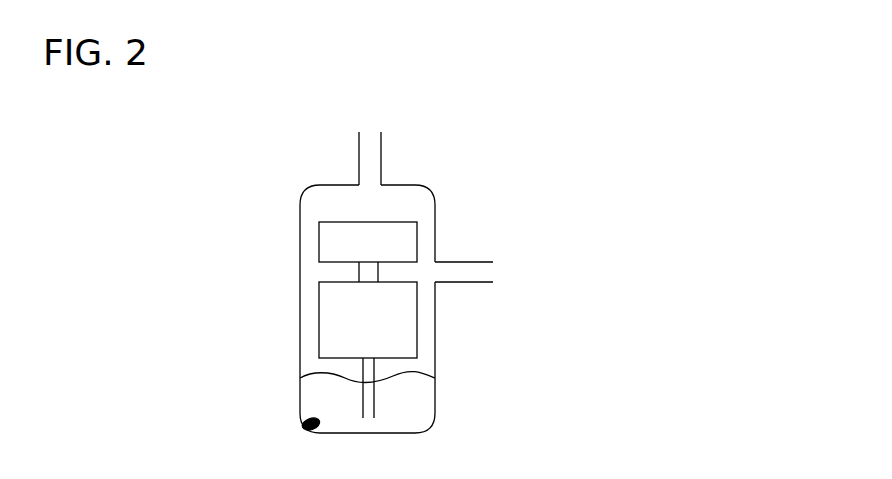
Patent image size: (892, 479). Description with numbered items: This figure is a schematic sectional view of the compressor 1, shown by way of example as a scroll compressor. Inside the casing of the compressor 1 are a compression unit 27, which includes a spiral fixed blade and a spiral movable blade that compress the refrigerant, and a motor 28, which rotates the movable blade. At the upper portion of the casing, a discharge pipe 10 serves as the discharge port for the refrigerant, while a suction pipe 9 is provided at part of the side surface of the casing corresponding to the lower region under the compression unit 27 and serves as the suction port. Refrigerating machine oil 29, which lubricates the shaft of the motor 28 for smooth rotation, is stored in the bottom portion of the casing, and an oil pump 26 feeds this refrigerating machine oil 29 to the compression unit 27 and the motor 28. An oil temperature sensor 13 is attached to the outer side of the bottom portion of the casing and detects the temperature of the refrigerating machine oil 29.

The compressor 1 is at (437, 215).
The suction pipe 9 is at (487, 257).
The discharge pipe 10 is at (383, 157).
The oil temperature sensor 13 is at (302, 425).
The oil pump 26 is at (363, 395).
The compression unit 27 is at (319, 247).
The motor 28 is at (319, 328).
The refrigerating machine oil 29 is at (417, 415).